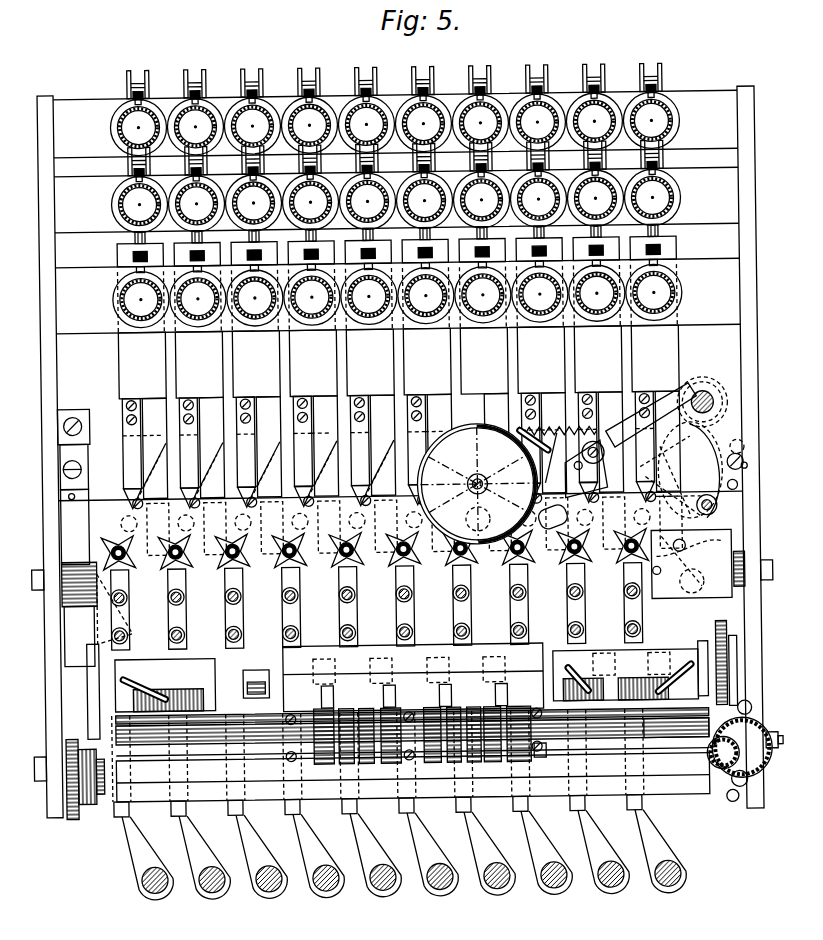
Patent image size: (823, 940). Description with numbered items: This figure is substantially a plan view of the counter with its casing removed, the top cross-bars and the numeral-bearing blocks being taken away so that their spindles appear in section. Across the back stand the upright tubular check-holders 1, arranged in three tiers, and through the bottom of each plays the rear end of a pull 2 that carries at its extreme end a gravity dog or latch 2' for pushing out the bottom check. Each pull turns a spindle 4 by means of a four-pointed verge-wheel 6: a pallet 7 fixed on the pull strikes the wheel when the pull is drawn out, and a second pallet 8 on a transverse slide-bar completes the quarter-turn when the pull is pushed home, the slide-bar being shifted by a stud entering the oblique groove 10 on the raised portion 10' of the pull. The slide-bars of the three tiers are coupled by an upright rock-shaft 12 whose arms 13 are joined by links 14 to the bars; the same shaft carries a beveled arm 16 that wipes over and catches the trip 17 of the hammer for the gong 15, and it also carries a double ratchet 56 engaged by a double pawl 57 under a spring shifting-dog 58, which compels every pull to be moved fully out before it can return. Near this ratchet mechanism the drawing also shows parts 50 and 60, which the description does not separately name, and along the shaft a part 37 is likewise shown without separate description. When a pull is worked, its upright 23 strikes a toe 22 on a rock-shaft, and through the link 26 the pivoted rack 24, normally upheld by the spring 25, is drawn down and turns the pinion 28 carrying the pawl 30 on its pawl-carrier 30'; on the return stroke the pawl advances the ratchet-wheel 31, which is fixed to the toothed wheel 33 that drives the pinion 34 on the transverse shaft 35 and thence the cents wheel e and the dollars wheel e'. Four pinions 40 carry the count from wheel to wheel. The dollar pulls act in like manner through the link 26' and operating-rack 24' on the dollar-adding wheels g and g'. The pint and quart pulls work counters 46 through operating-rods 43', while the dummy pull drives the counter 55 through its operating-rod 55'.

The tubular check-holder 1 is at (118, 125).
The pull 2 is at (408, 613).
The gravity dog or latch 2' is at (389, 190).
The spindle 4 is at (383, 584).
The star-wheel or verge-wheel 6 is at (375, 563).
The pallet 7 is at (387, 461).
The pallet 8 is at (387, 542).
The oblique groove 10 is at (349, 467).
The raised portion of the pull 10' is at (352, 422).
The upright rock-shaft 12 is at (705, 395).
The arm 13 is at (748, 469).
The link 14 is at (716, 497).
The gong or bell 15 is at (478, 484).
The arm 16 is at (651, 415).
The trip 17 is at (600, 446).
The toe 22 is at (413, 735).
The upright 23 is at (402, 668).
The rack 24 is at (761, 670).
The operating-rack 24' is at (95, 574).
The spring 25 is at (725, 663).
The link 26 is at (134, 692).
The link 26' is at (390, 751).
The pinion 28 is at (722, 772).
The pawl 30 is at (729, 806).
The pawl-carrier 30' is at (789, 740).
The ratchet-wheel 31 is at (758, 742).
The toothed wheel 33 is at (745, 783).
The pinion 34 is at (749, 712).
The transversely-arranged shaft 35 is at (676, 725).
The collar 37 is at (544, 756).
The pinion 40 is at (412, 682).
The operating-rod 43' is at (697, 659).
The counter 46 is at (626, 675).
The arm 50 is at (673, 474).
The counter 55 is at (690, 470).
The operating-rod 55' is at (169, 685).
The double ratchet 56 is at (670, 476).
The double pawl 57 is at (716, 536).
The spring shifting-dog 58 is at (700, 598).
The stud 60 is at (746, 451).
The dollar-adding wheel g is at (392, 745).
The dollar-adding wheel g' is at (370, 745).
The cents wheel e is at (522, 743).
The dollars wheel e' is at (500, 743).